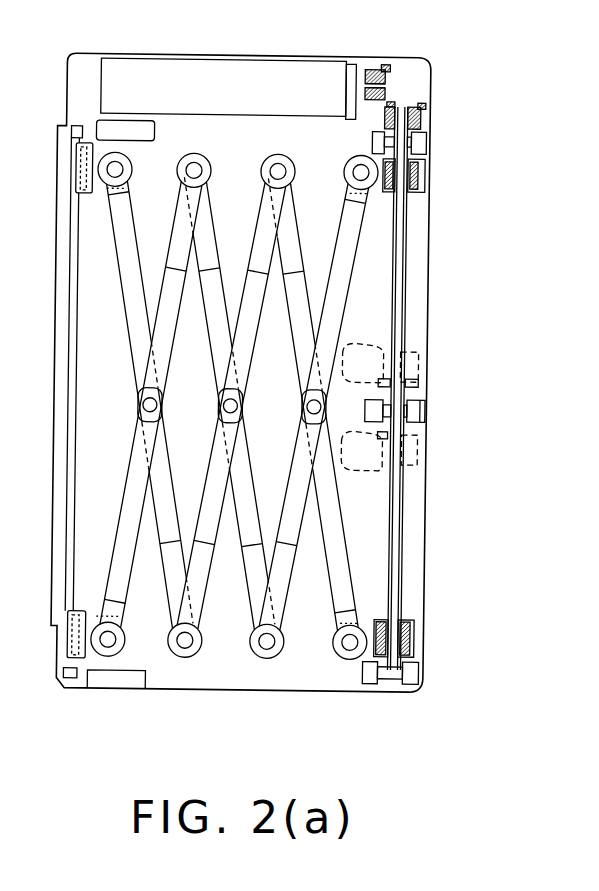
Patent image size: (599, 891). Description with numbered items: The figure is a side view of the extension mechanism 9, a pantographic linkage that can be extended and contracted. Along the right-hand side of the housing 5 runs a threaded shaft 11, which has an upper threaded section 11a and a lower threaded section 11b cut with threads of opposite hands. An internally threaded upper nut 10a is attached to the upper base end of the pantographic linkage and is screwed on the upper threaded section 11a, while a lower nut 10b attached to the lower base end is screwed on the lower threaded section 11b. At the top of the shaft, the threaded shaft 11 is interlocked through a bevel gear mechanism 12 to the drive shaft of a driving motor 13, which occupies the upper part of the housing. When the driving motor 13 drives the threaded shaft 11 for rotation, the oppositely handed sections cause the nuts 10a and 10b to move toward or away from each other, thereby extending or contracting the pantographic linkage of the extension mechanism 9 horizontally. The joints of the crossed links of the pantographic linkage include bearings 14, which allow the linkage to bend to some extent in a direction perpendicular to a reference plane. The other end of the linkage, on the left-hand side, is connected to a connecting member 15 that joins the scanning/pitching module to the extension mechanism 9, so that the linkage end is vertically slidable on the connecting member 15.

The casing frame 5 is at (428, 302).
The extension mechanism 9 is at (295, 239).
The upper nut 10a is at (418, 174).
The lower nut 10b is at (412, 639).
The threaded shaft 11 is at (409, 329).
The upper threaded section 11a is at (405, 270).
The lower threaded section 11b is at (404, 550).
The bevel gear mechanism 12 is at (390, 101).
The driving motor 13 is at (303, 67).
The bearings 14 is at (172, 183).
The connecting member 15 is at (54, 424).